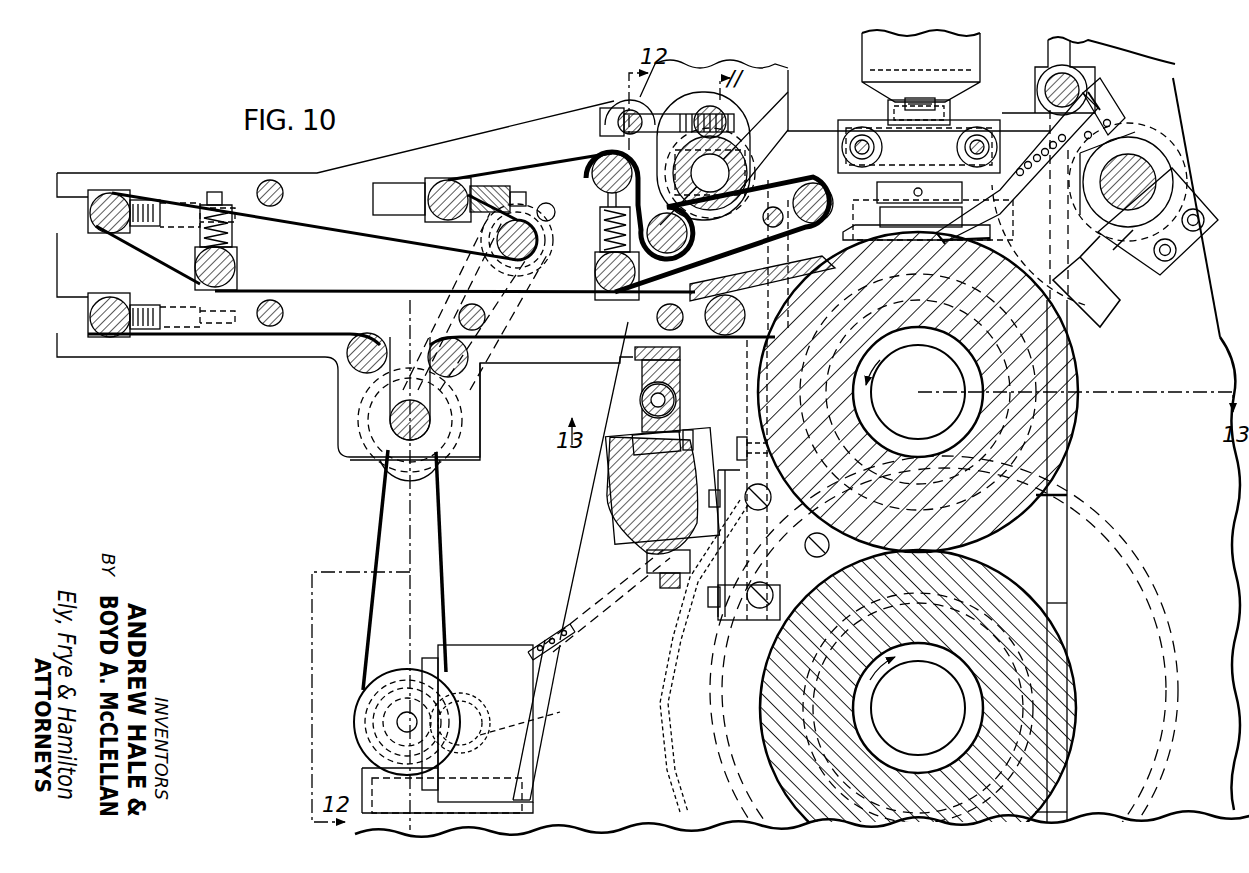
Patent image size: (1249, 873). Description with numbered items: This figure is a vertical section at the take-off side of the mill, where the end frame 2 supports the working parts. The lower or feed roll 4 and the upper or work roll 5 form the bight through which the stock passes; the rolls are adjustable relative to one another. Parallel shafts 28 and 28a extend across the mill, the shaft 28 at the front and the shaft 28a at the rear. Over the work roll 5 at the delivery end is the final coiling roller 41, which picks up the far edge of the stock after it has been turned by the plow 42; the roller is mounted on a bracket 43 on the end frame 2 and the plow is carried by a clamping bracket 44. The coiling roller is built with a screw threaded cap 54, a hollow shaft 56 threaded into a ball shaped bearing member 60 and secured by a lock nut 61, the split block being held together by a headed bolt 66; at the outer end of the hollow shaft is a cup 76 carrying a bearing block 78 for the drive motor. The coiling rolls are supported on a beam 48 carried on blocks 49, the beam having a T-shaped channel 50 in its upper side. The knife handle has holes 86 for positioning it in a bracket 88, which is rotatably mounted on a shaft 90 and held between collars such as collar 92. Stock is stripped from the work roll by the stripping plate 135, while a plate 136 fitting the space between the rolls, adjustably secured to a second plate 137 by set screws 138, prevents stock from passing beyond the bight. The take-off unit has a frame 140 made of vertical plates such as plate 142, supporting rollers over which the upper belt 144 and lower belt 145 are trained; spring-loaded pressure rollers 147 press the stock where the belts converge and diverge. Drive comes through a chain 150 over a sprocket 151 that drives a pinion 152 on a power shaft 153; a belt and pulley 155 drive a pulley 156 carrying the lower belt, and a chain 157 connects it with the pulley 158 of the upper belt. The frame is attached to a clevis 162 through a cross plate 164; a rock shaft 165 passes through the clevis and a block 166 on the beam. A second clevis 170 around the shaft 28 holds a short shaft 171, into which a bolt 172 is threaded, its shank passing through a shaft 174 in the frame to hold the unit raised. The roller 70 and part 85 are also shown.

The end frame 2 is at (1200, 640).
The feed roll 4 is at (1066, 655).
The work roll 5 is at (1066, 428).
The shaft 28 is at (780, 122).
The shaft 28a is at (1140, 168).
The final coiling roller 41 is at (992, 241).
The plow 42 is at (1098, 312).
The bracket 43 is at (1082, 158).
The clamping bracket 44 is at (1172, 185).
The beam 48 is at (610, 503).
The blocks 49 is at (686, 442).
The T-shaped channel 50 is at (612, 455).
The screw threaded cap 54 is at (955, 186).
The hollow shaft 56 is at (912, 98).
The ball shaped bearing member 60 is at (892, 130).
The lock nut 61 is at (936, 118).
The headed bolt 66 is at (965, 143).
The guide roller 70 is at (860, 165).
The cup 76 is at (970, 75).
The bearing block 78 is at (972, 33).
The lever lower portion 85 is at (996, 217).
The holes 86 is at (1012, 190).
The bracket 88 is at (1118, 110).
The shaft 90 is at (1082, 88).
The collar 92 is at (1100, 100).
The stripping plate 135 is at (772, 278).
The plate 136 is at (775, 612).
The second plate 137 is at (727, 474).
The set screws 138 is at (708, 597).
The frame 140 is at (485, 126).
The vertical plate 142 is at (402, 163).
The upper belt 144 is at (822, 180).
The lower belt 145 is at (618, 365).
The spring-loaded pressure rollers 147 is at (232, 268).
The chain 150 is at (542, 640).
The sprocket 151 is at (545, 713).
The pinion 152 is at (395, 737).
The power shaft 153 is at (405, 722).
The belt and pulley 155 is at (453, 597).
The pulley 156 is at (440, 484).
The chain 157 is at (455, 271).
The pulley 158 is at (497, 240).
The clevis 162 is at (684, 368).
The cross plate 164 is at (630, 338).
The rock shaft 165 is at (680, 392).
The block 166 is at (645, 428).
The second clevis 170 is at (718, 152).
The short shaft 171 is at (786, 82).
The bolt 172 is at (705, 96).
The shaft 174 is at (622, 108).